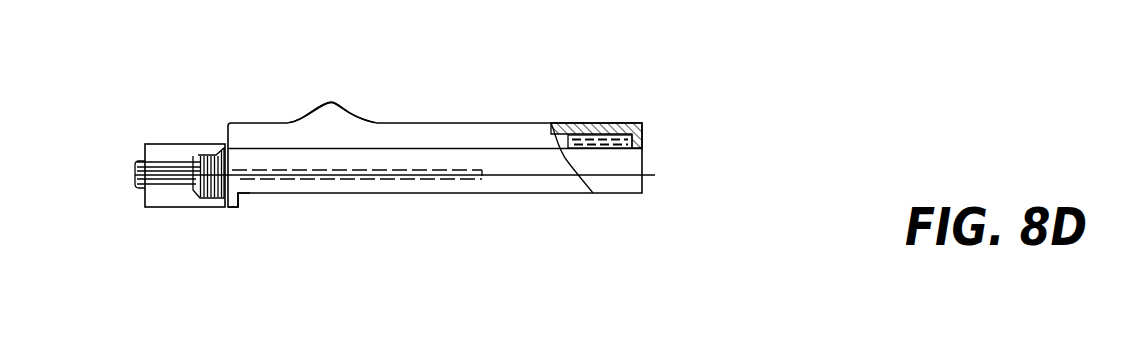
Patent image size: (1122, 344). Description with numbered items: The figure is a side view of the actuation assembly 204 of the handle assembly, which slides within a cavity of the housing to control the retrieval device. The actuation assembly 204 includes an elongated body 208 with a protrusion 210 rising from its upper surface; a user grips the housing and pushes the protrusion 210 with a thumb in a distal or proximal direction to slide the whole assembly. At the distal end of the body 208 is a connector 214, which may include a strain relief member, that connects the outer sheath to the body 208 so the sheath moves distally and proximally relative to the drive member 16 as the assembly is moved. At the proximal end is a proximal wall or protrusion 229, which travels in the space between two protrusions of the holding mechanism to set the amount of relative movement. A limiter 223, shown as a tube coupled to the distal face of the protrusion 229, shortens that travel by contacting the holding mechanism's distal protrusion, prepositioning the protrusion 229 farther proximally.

The drive member 16 is at (512, 175).
The actuation assembly 204 is at (256, 198).
The body 208 is at (247, 122).
The protrusion 210 is at (333, 102).
The connector 214 is at (163, 143).
The limiter 223 is at (612, 143).
The proximal wall or protrusion 229 is at (643, 140).